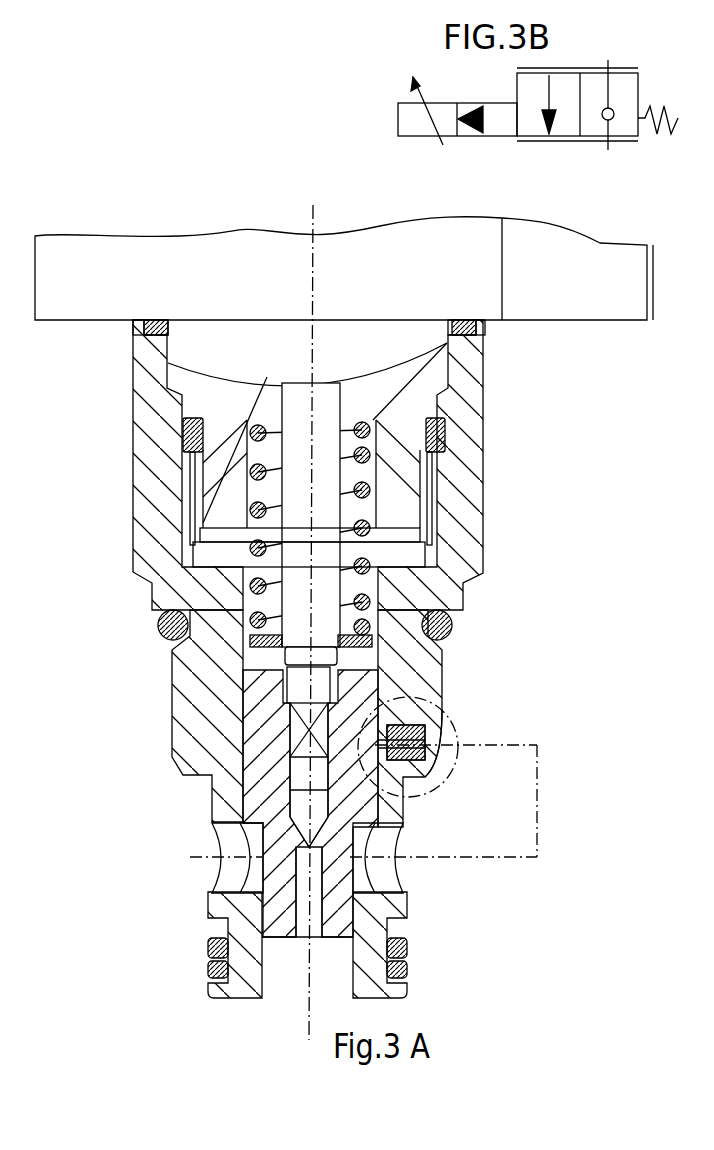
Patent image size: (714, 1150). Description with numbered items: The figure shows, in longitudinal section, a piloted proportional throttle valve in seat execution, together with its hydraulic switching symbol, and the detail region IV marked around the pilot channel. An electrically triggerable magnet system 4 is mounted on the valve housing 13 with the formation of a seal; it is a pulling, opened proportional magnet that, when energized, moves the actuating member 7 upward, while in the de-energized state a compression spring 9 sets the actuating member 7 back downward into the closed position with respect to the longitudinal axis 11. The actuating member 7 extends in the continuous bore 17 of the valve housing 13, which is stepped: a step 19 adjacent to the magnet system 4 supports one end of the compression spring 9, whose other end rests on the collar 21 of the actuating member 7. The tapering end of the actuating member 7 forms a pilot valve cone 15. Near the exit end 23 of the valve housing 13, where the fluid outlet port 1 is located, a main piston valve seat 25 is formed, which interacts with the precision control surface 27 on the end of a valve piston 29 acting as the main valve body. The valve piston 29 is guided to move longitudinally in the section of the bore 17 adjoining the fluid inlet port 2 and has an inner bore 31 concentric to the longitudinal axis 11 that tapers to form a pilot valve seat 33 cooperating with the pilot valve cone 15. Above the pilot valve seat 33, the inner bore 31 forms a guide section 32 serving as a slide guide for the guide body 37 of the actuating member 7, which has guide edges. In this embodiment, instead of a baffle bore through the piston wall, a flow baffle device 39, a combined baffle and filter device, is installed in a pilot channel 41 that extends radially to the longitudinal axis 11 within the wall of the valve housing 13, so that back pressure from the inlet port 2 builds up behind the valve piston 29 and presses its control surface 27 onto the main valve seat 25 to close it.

In FIG. 3B, the valve fluid outlet port 1 is at (608, 147).
In FIG. 3A, the valve fluid outlet port 1 is at (288, 985).
In FIG. 3B, the fluid inlet port 2 is at (608, 78).
In FIG. 3A, the fluid inlet port 2 is at (430, 752).
In FIG. 3A, the magnet system 4 is at (229, 193).
In FIG. 3A, the actuating member 7 is at (300, 549).
In FIG. 3A, the compression spring 9 is at (373, 447).
In FIG. 3A, the longitudinal axis 11 is at (322, 222).
In FIG. 3A, the valve housing 13 is at (197, 718).
In FIG. 3A, the pilot valve cone 15 is at (300, 843).
In FIG. 3A, the continuous bore 17 is at (243, 678).
In FIG. 3A, the step 19 is at (243, 418).
In FIG. 3A, the collar 21 is at (160, 629).
In FIG. 3A, the exit end 23 is at (213, 993).
In FIG. 3A, the piston valve seat 25 is at (375, 928).
In FIG. 3A, the precision control surface 27 is at (250, 918).
In FIG. 3A, the valve piston 29 is at (265, 760).
In FIG. 3A, the inner bore 31 is at (255, 788).
In FIG. 3A, the guide section 32 is at (270, 690).
In FIG. 3A, the pilot valve seat 33 is at (397, 893).
In FIG. 3A, the guide body 37 is at (285, 738).
In FIG. 3A, the flow baffle device 39 is at (430, 735).
In FIG. 3A, the pilot channel 41 is at (413, 781).
In FIG. 3A, the detail section IV is at (437, 692).